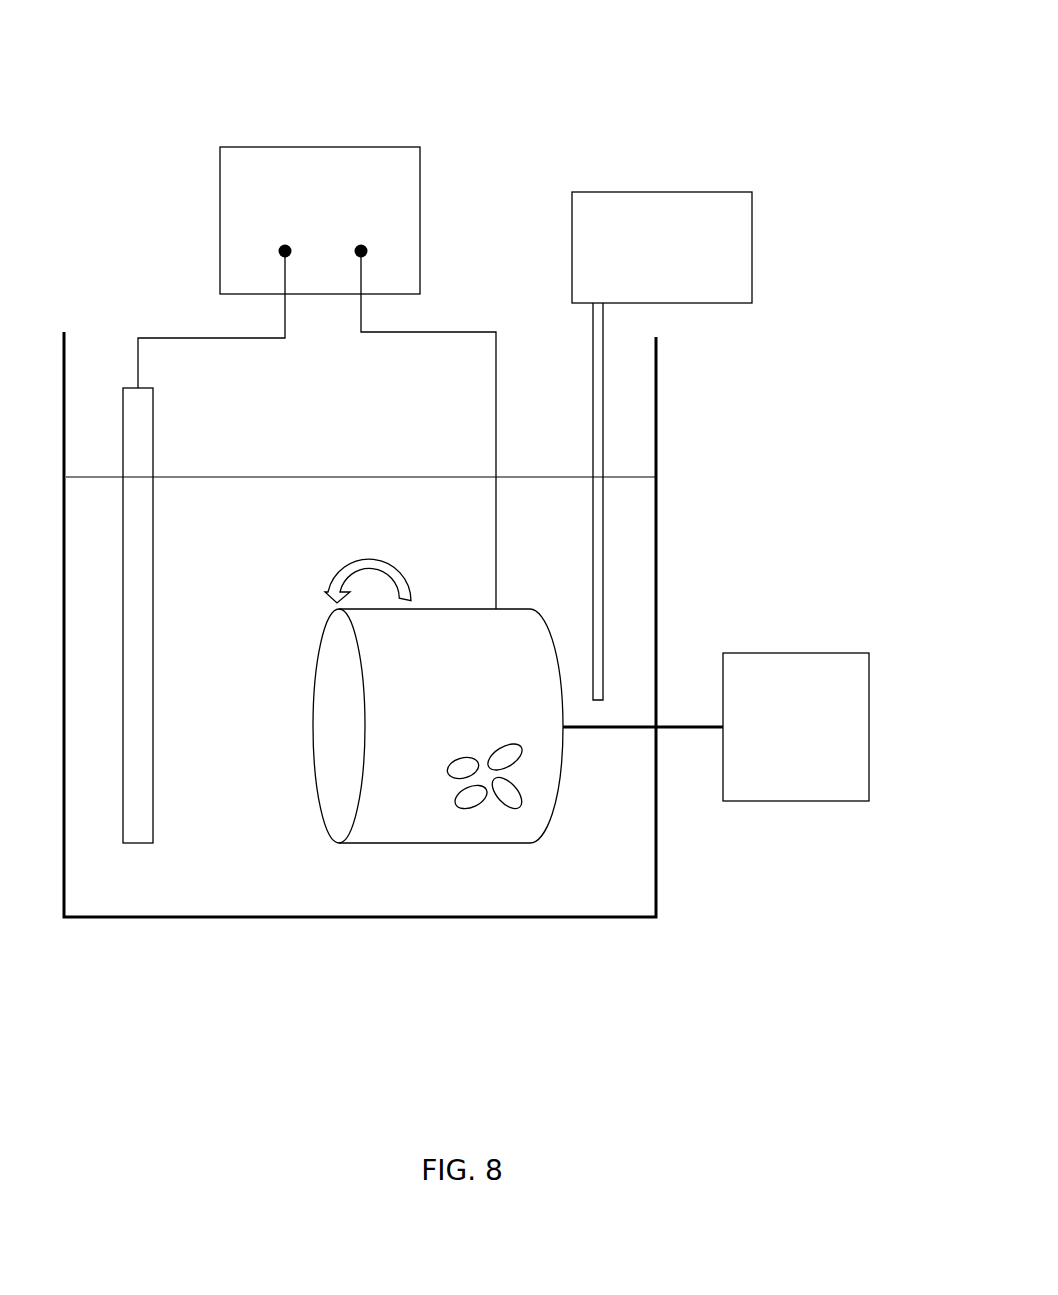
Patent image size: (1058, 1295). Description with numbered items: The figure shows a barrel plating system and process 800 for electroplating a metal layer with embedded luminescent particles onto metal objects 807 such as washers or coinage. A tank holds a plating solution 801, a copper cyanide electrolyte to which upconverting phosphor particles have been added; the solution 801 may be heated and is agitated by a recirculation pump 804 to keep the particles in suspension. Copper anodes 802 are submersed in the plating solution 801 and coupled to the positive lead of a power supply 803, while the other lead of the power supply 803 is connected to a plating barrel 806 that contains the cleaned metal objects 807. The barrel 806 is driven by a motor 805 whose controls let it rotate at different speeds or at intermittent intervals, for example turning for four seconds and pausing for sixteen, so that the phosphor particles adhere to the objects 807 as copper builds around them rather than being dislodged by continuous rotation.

The system and process 800 is at (558, 82).
The plating solution 801 is at (220, 567).
The copper anodes 802 is at (128, 386).
The power supply 803 is at (292, 216).
The recirculation pump 804 is at (642, 284).
The motor 805 is at (773, 688).
The plating barrel 806 is at (497, 846).
The metal objects 807 is at (455, 778).